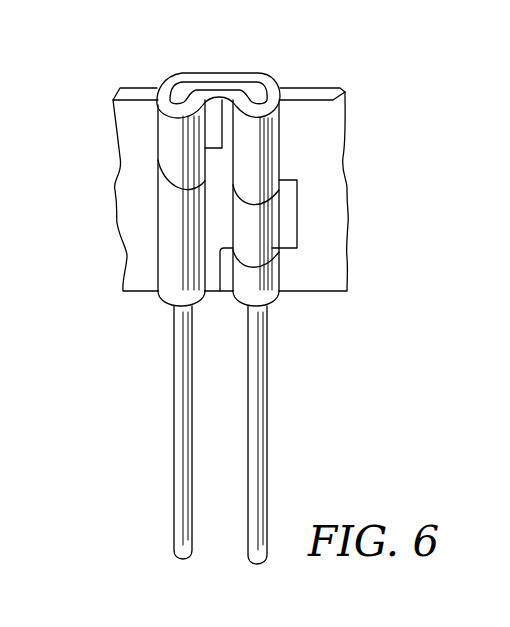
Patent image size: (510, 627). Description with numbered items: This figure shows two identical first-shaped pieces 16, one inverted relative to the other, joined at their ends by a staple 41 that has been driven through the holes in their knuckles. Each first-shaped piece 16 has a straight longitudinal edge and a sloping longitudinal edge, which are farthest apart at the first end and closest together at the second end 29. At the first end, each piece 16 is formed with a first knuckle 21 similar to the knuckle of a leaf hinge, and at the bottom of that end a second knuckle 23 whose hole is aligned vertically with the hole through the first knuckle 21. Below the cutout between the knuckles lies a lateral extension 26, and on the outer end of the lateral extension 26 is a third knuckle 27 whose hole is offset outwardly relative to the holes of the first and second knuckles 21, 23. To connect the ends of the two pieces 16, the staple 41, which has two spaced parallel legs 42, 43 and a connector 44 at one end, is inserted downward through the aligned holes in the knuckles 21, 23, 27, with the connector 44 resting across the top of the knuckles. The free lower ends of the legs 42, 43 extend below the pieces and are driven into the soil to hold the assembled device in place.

The first-shaped piece 16 is at (132, 125).
The first knuckle 21 is at (263, 137).
The second knuckle 23 is at (167, 130).
The lateral extension 26 is at (213, 214).
The third knuckle 27 is at (272, 234).
The second end 29 is at (170, 168).
The staple 41 is at (206, 74).
The leg 42 is at (180, 400).
The leg 43 is at (255, 417).
The connector 44 is at (226, 80).